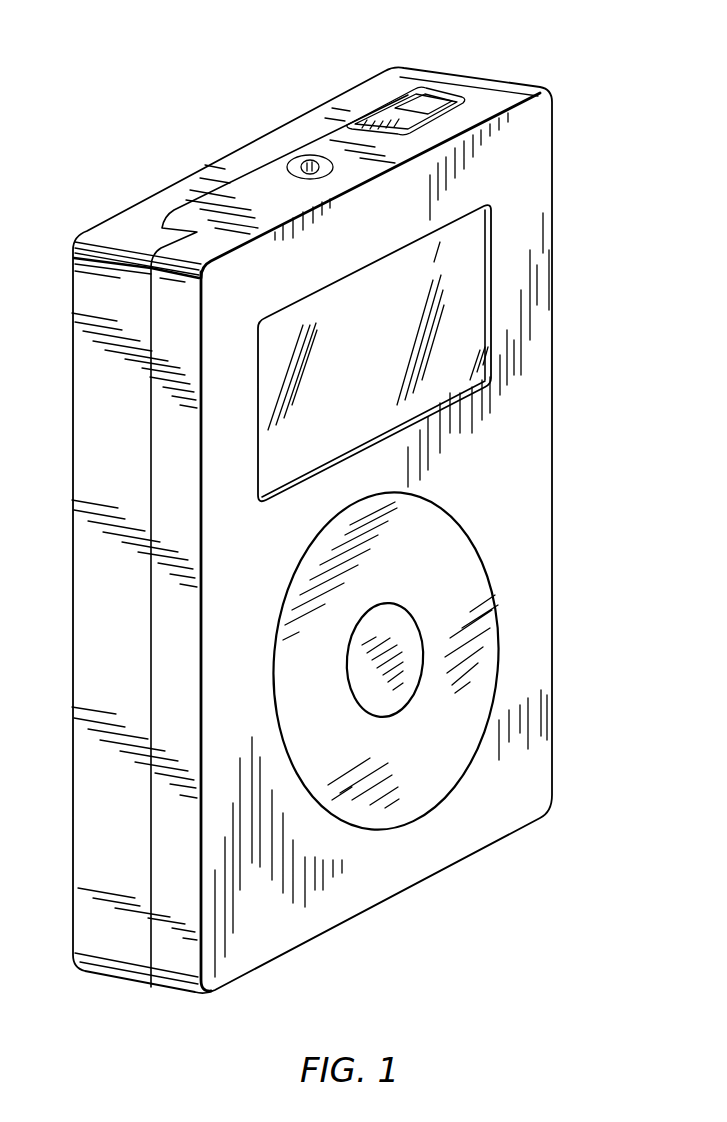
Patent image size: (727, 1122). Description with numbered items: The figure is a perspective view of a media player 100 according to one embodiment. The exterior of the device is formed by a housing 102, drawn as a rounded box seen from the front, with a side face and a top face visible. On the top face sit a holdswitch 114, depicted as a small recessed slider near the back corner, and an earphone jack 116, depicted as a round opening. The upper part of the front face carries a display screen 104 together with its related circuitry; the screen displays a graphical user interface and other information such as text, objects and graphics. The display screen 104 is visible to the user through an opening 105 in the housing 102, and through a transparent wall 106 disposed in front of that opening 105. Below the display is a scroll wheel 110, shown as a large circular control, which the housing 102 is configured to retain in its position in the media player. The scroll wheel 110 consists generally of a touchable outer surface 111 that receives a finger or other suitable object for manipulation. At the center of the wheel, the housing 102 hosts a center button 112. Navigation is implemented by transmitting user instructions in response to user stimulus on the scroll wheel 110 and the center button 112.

The media player 100 is at (150, 129).
The housing 102 is at (553, 130).
The display screen 104 is at (291, 403).
The opening 105 is at (492, 325).
The transparent wall 106 is at (458, 257).
The scroll wheel 110 is at (462, 550).
The touchable outer surface 111 is at (432, 572).
The center button 112 is at (420, 688).
The holdswitch 114 is at (410, 113).
The earphone jack 116 is at (308, 164).